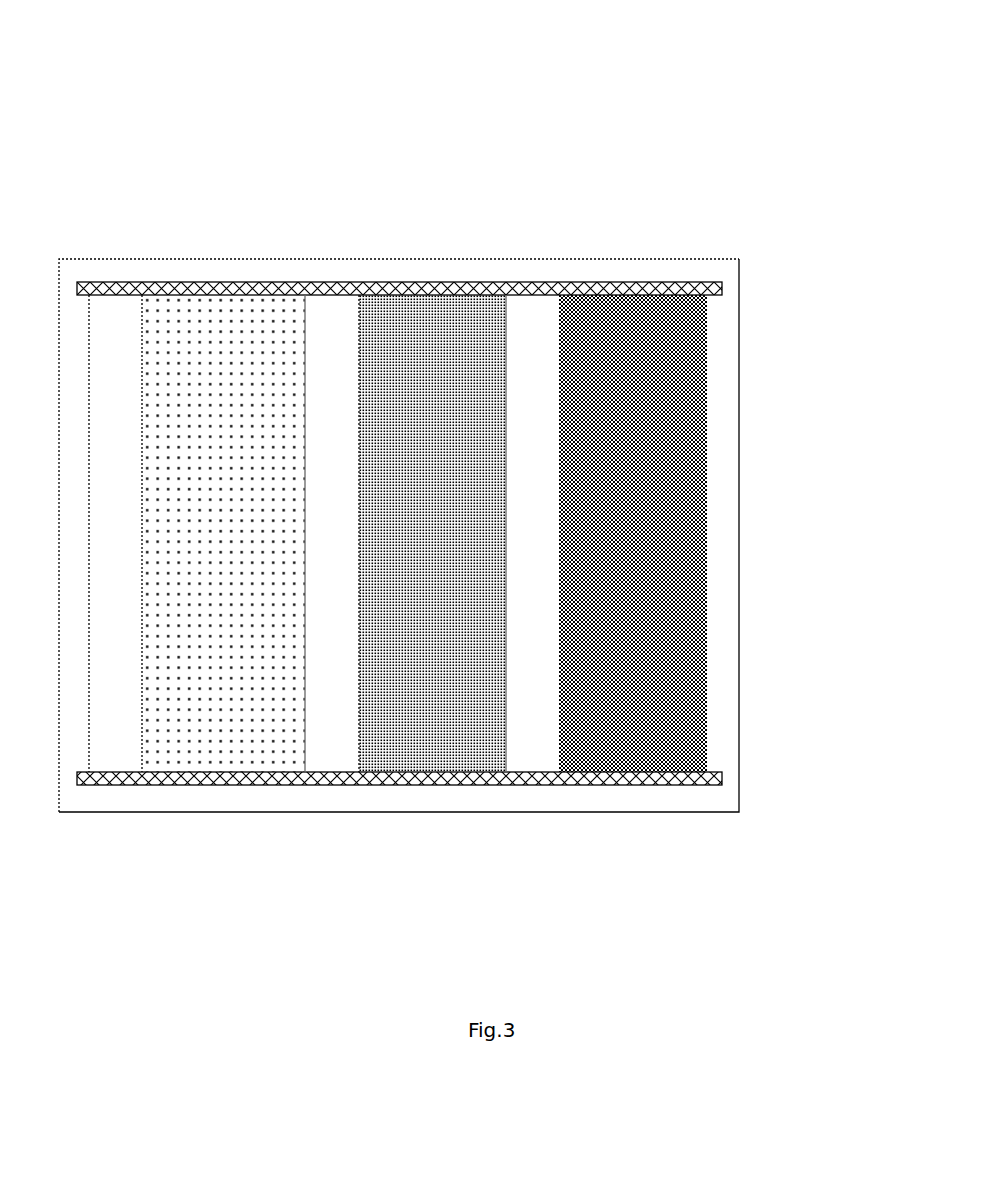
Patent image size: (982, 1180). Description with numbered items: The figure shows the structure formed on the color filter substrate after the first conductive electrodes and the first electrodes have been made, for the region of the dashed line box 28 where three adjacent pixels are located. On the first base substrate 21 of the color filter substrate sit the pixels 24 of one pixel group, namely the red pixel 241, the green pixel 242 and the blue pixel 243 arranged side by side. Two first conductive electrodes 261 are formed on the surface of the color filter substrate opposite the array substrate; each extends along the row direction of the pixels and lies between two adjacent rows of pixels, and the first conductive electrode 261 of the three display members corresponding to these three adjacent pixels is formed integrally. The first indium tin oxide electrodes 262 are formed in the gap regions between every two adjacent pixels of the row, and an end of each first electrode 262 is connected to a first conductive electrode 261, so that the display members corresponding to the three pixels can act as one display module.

The first base substrate 21 is at (726, 493).
The pixel 24 is at (424, 451).
The red pixel 241 is at (207, 375).
The green pixel 242 is at (413, 375).
The blue pixel 243 is at (633, 486).
The first conductive electrode 261 is at (720, 289).
The first electrode 262 is at (537, 747).
The dashed line box 28 is at (420, 110).